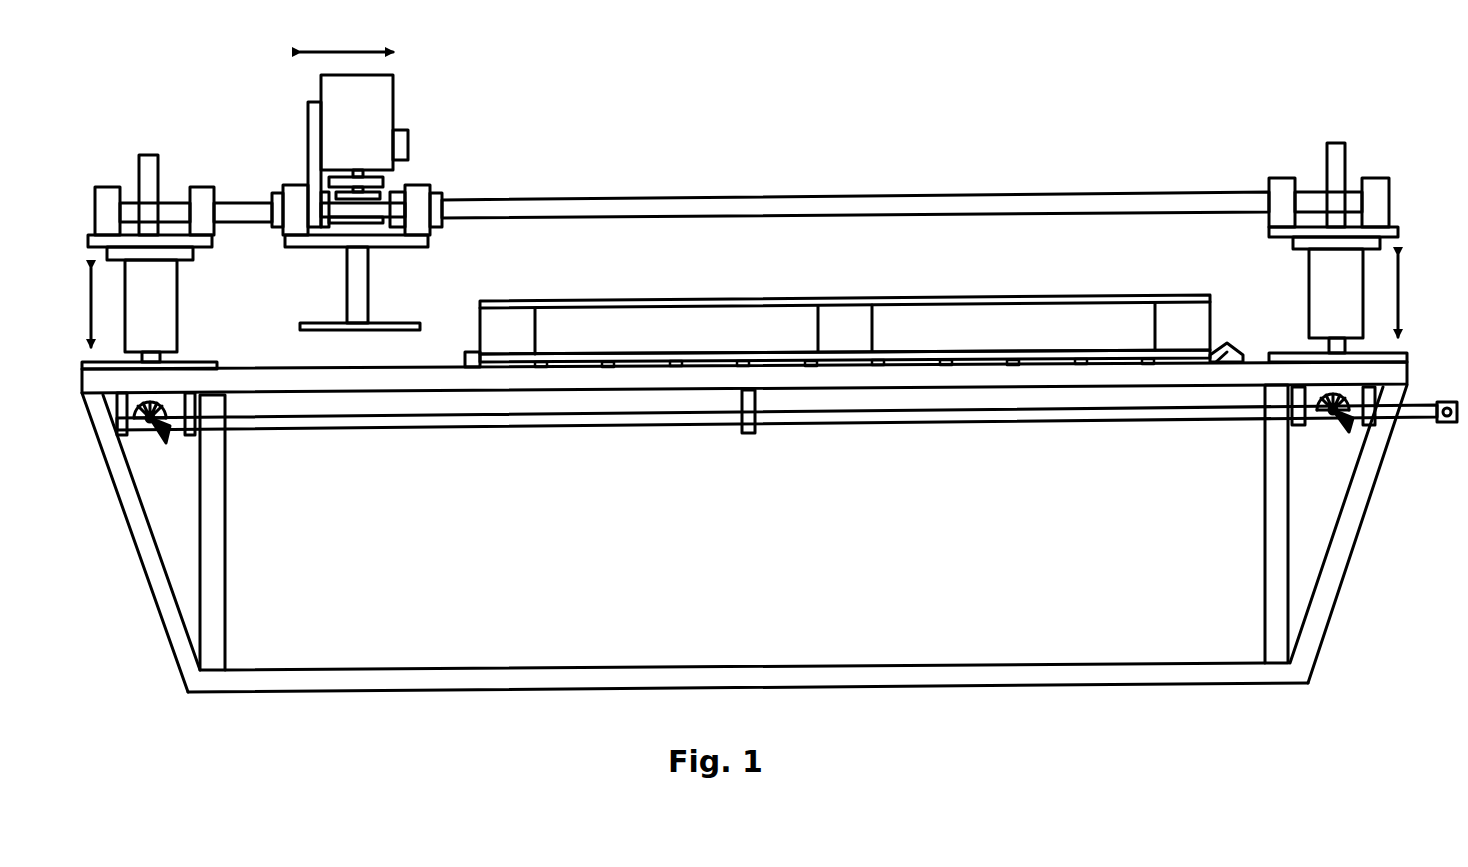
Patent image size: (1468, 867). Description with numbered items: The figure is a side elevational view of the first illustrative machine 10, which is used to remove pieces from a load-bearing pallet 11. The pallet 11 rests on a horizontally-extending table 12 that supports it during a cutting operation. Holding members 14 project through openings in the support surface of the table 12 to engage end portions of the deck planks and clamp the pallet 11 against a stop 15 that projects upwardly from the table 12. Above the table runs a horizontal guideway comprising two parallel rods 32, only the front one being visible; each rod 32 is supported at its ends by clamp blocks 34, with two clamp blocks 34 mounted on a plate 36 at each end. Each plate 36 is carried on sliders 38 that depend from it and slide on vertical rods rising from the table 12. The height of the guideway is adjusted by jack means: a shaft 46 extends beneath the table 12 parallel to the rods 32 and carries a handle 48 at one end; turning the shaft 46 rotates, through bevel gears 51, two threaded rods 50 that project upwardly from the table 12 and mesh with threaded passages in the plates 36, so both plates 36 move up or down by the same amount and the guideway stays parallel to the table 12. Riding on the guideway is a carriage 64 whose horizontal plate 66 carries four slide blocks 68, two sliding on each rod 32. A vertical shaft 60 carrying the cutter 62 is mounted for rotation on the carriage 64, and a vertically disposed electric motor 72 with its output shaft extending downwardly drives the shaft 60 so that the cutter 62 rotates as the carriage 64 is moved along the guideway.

The machine 10 is at (832, 146).
The pallet 11 is at (772, 298).
The table 12 is at (337, 382).
The holding member 14 is at (1237, 343).
The stop 15 is at (465, 357).
The rod 32 is at (960, 203).
The clamp block 34 is at (108, 190).
The plate 36 is at (203, 242).
The slider 38 is at (165, 325).
The shaft 46 is at (1012, 417).
The handle 48 is at (1447, 425).
The threaded rod 50 is at (148, 155).
The bevel gears 51 is at (163, 440).
The vertical shaft 60 is at (353, 284).
The cutter 62 is at (403, 323).
The carriage 64 is at (422, 164).
The horizontal plate 66 is at (428, 241).
The slide block 68 is at (292, 188).
The electric motor 72 is at (378, 100).